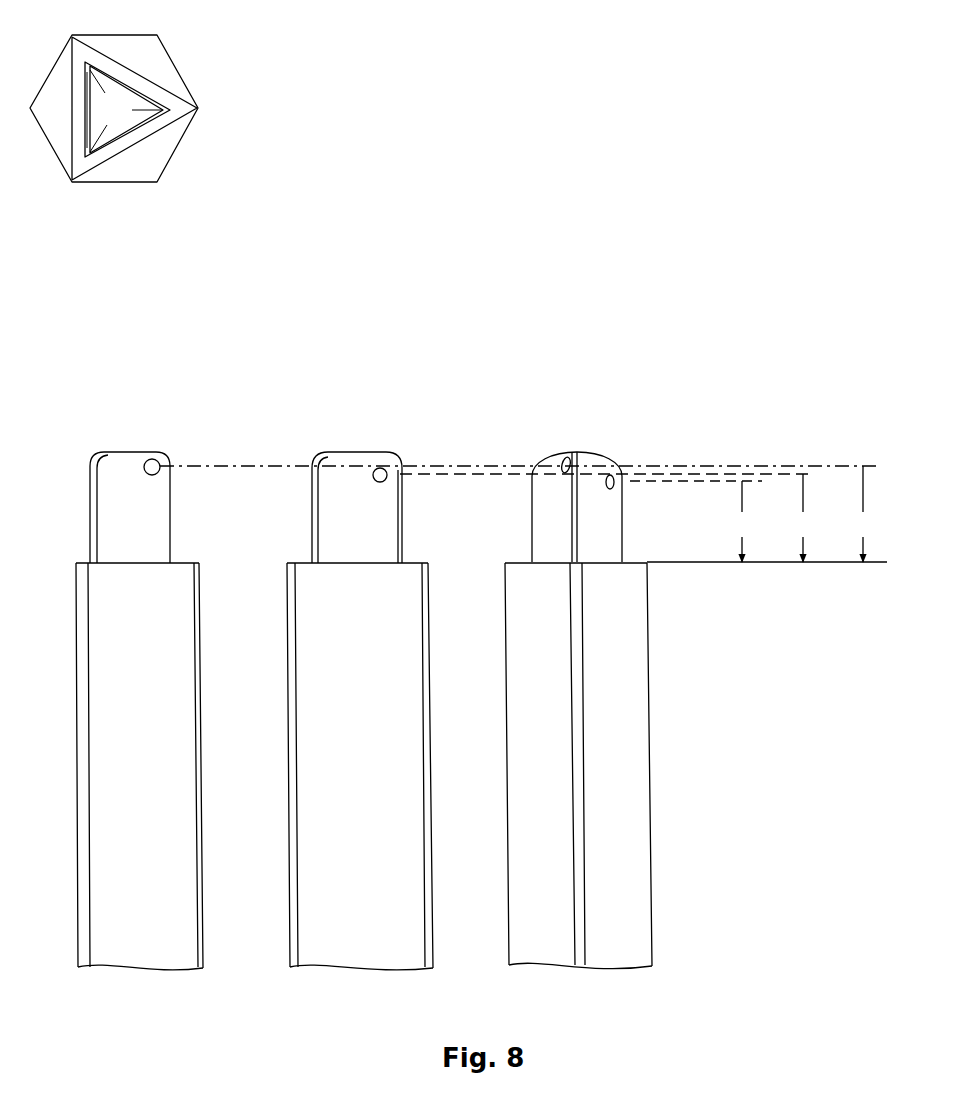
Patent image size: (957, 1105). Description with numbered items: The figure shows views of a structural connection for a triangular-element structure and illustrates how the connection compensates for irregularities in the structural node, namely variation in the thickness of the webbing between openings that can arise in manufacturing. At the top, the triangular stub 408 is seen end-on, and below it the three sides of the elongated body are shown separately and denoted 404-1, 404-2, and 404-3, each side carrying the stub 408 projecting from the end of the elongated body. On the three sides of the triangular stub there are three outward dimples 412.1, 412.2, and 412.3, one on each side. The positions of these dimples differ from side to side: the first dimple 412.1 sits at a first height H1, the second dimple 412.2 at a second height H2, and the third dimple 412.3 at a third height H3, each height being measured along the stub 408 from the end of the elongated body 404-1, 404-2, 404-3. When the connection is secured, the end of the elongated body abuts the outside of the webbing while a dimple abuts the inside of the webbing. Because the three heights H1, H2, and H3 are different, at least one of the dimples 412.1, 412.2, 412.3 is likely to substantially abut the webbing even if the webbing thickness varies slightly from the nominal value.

The stub 408 is at (172, 58).
The outward dimple 412.1 is at (155, 457).
The outward dimple 412.2 is at (382, 465).
The outward dimple 412.3 is at (613, 492).
The side of elongated body 404-1 is at (139, 766).
The side of elongated body 404-2 is at (360, 766).
The side of elongated body 404-3 is at (578, 766).
The height H1 is at (744, 521).
The height H2 is at (806, 518).
The height H3 is at (866, 514).